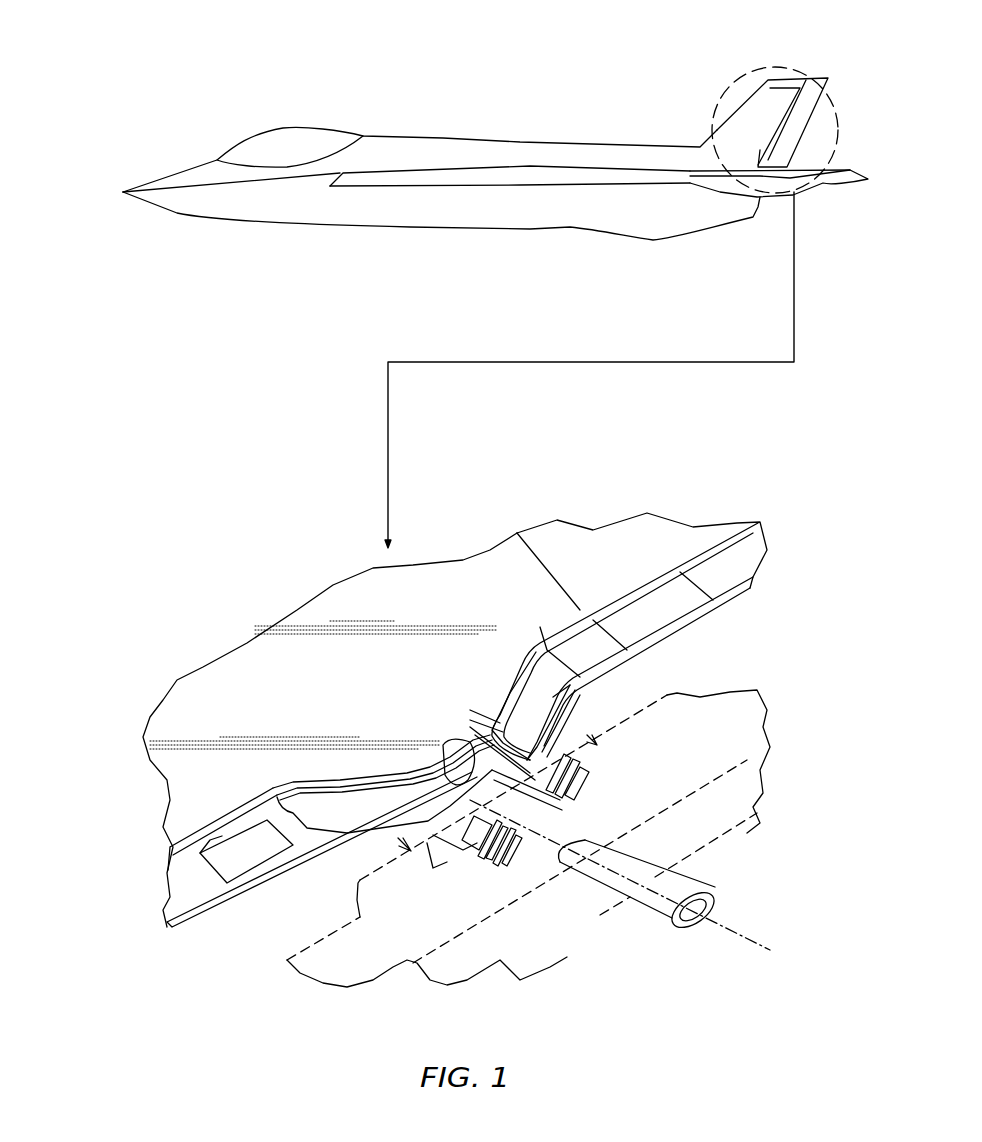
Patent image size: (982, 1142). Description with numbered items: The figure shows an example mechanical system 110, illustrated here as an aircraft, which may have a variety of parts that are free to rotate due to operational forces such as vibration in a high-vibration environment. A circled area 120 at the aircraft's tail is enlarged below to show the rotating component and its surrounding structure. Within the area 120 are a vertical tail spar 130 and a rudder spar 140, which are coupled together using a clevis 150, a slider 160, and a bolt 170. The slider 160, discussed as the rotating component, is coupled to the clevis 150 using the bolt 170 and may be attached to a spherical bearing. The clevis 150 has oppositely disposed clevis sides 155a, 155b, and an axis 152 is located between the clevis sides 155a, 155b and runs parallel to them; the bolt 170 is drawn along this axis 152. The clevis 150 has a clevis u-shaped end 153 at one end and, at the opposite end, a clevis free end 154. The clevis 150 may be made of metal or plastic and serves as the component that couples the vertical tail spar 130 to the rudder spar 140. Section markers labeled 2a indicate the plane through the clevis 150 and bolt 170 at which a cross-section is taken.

The mechanical system 110 is at (424, 136).
The area 120 is at (738, 78).
The vertical tail spar 130 is at (345, 608).
The rudder spar 140 is at (753, 717).
The clevis 150 is at (457, 757).
The axis 152 is at (708, 920).
The clevis u-shaped end 153 is at (470, 743).
The clevis free end 154 is at (553, 697).
The clevis side 155a is at (407, 767).
The clevis side 155b is at (570, 687).
The slider 160 is at (478, 722).
The bolt 170 is at (560, 787).
The section line 2a is at (486, 789).